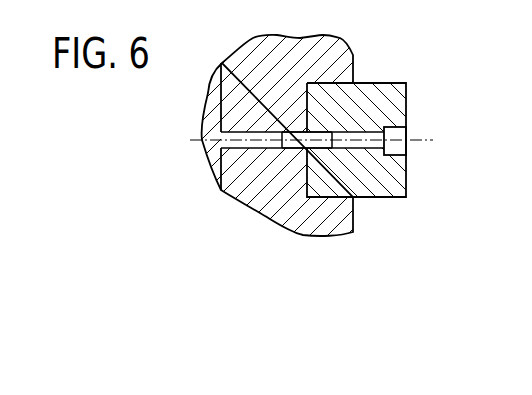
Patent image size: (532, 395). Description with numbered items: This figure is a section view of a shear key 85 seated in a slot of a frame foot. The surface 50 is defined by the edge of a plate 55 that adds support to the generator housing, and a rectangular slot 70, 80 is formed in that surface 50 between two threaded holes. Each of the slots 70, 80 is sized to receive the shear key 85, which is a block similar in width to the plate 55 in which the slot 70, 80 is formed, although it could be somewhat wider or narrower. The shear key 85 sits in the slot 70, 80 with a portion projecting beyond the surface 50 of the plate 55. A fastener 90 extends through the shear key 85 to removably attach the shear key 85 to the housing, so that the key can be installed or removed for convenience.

The surface 50 is at (353, 54).
The plate 55 is at (280, 200).
The rectangular slot 70 is at (308, 103).
The second slot 80 is at (307, 140).
The shear key 85 is at (373, 175).
The fastener 90 is at (397, 147).